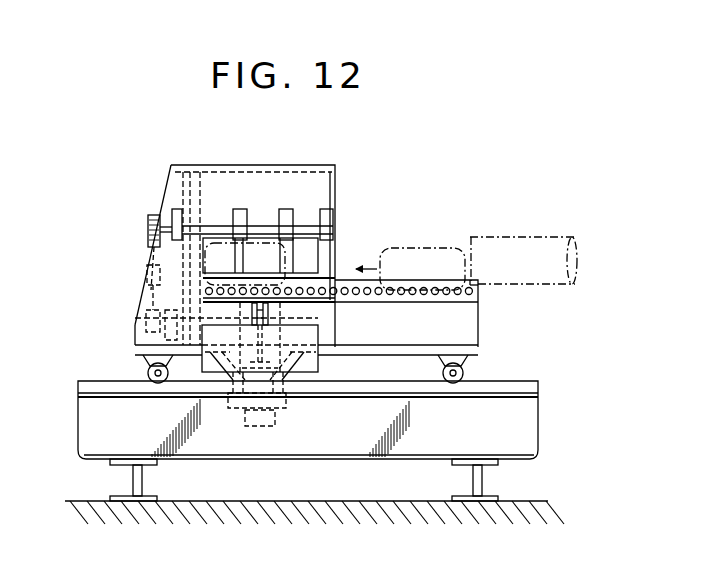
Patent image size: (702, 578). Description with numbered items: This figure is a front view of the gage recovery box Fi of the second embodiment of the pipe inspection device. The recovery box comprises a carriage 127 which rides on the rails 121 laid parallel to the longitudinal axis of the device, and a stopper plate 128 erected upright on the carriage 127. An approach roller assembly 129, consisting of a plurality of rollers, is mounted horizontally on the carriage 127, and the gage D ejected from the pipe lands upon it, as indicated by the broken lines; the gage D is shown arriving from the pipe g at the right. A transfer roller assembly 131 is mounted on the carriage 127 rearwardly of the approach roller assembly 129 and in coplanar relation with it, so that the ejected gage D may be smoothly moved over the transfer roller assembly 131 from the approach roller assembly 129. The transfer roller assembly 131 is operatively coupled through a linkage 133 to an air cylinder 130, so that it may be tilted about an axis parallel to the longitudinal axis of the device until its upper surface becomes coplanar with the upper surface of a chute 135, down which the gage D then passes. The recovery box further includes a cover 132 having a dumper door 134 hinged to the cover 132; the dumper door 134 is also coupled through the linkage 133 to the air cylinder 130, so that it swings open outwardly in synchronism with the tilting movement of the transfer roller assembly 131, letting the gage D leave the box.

The rails 121 is at (520, 362).
The carriage 127 is at (477, 338).
The stopper plate 128 is at (196, 202).
The approach roller assembly 129 is at (372, 296).
The air cylinder 130 is at (278, 415).
The transfer roller assembly 131 is at (305, 273).
The cover 132 is at (320, 167).
The linkage 133 is at (148, 242).
The dumper door 134 is at (308, 255).
The chute 135 is at (213, 370).
The gage D is at (412, 246).
The pipe g is at (523, 244).
The gage recovery box Fi is at (165, 163).